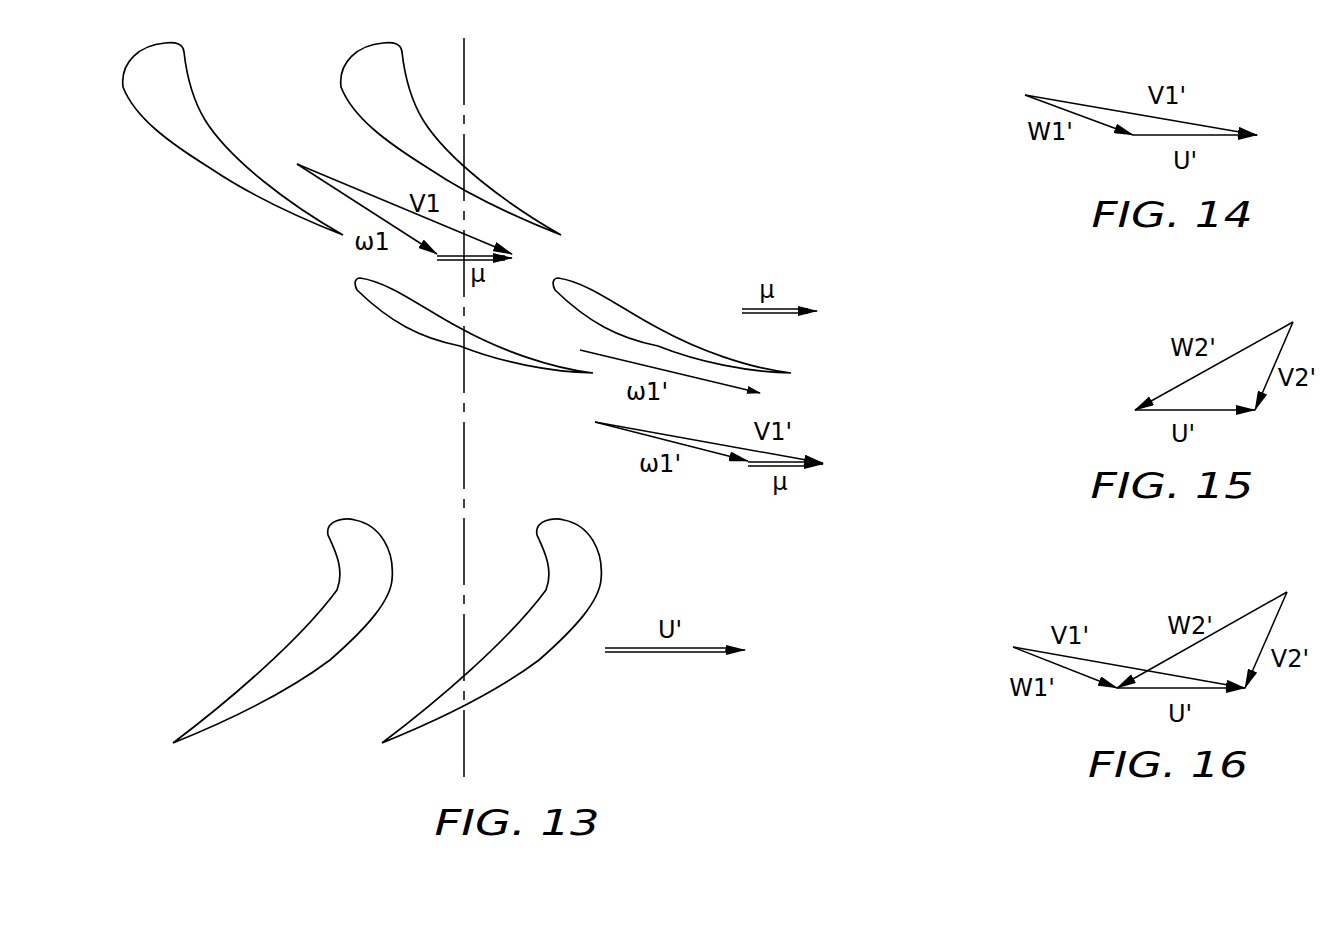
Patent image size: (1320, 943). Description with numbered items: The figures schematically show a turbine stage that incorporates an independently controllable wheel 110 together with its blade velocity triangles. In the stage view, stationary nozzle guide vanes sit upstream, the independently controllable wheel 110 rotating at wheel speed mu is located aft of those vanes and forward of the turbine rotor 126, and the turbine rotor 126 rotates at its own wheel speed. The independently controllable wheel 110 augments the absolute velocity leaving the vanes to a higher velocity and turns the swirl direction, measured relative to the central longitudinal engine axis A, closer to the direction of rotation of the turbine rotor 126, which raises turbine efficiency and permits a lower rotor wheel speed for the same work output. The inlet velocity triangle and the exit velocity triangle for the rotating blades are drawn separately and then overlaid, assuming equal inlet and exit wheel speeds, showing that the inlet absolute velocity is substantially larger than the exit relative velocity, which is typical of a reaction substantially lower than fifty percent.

The independently controllable wheel 110 is at (657, 310).
The turbine rotor 126 is at (263, 583).
The central longitudinal engine axis A is at (465, 58).